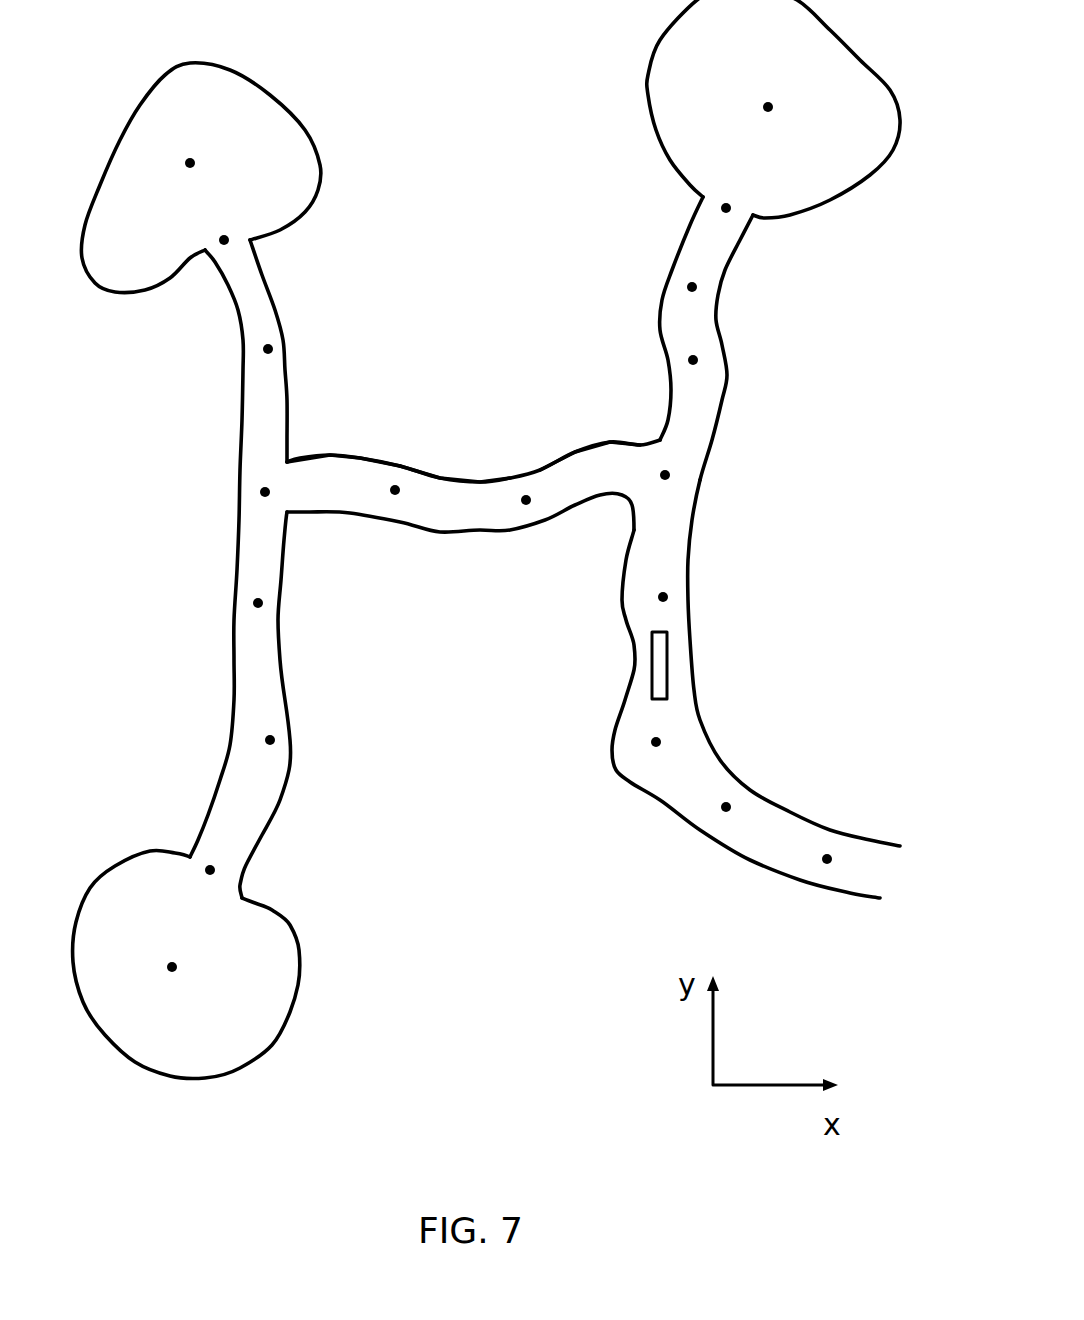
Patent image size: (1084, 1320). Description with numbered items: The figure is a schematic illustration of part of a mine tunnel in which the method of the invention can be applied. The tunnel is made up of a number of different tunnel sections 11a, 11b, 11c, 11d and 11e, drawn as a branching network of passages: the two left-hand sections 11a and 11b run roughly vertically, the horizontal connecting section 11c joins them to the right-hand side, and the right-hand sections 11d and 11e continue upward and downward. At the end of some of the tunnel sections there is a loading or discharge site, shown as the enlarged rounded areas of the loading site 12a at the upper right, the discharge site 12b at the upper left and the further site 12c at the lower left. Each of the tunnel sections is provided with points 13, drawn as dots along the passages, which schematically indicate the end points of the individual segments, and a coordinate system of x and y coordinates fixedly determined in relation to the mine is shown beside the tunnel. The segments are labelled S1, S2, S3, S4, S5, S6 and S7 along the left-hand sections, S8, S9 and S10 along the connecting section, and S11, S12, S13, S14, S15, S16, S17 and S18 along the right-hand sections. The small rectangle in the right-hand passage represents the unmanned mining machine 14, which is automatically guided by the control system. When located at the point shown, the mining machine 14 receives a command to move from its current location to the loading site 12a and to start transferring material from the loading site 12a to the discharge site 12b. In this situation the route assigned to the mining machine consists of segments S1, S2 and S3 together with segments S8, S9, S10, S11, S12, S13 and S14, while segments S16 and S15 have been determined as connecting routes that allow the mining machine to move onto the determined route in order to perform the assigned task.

The tunnel section 11a is at (296, 299).
The tunnel section 11b is at (329, 737).
The tunnel section 11c is at (494, 558).
The tunnel section 11d is at (626, 286).
The tunnel section 11e is at (578, 786).
The loading site 12a is at (617, 114).
The discharge site 12b is at (338, 131).
The loading or discharge site 12c is at (315, 1000).
The point 13 is at (393, 495).
The unmanned mining machine 14 is at (660, 668).
The segment S1 is at (198, 190).
The segment S2 is at (252, 302).
The segment S3 is at (268, 417).
The segment S4 is at (260, 547).
The segment S5 is at (267, 672).
The segment S6 is at (240, 800).
The segment S7 is at (193, 922).
The segment S8 is at (330, 483).
The segment S9 is at (453, 498).
The segment S10 is at (598, 477).
The segment S11 is at (680, 417).
The segment S12 is at (697, 322).
The segment S13 is at (710, 247).
The segment S14 is at (752, 167).
The segment S15 is at (667, 540).
The segment S16 is at (683, 662).
The segment S17 is at (688, 768).
The segment S18 is at (770, 830).